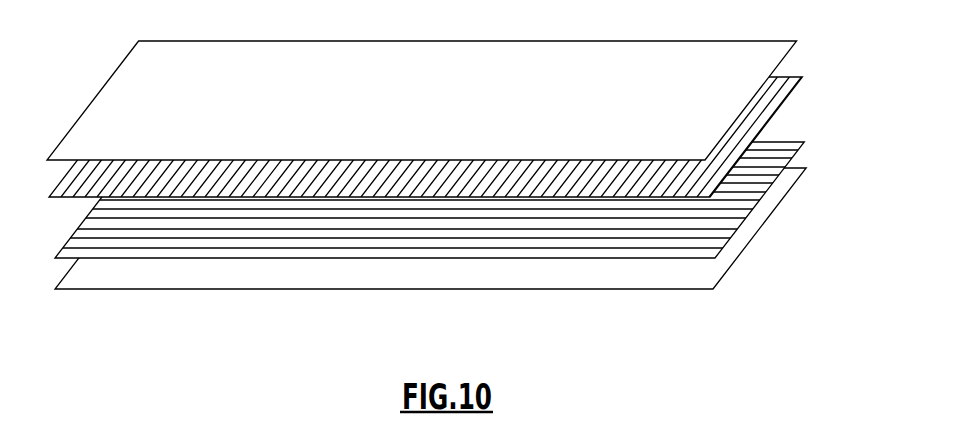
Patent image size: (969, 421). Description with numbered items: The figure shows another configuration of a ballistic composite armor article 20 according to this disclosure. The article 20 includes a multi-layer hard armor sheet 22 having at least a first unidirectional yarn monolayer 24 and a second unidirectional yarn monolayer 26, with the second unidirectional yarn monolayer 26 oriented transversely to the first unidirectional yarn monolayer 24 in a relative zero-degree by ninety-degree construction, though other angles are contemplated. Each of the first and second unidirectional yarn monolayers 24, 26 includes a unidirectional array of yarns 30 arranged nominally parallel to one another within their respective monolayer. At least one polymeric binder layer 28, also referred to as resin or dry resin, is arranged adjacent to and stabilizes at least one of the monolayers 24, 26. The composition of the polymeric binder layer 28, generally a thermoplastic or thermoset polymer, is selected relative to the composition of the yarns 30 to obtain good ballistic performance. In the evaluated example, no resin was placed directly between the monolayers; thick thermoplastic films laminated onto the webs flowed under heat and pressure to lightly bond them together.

The article 20 is at (484, 215).
The multi-layer hard armor sheet 22 is at (484, 203).
The first unidirectional yarn monolayer 24 is at (685, 170).
The second unidirectional yarn monolayer 26 is at (670, 243).
The polymeric binder layer 28 is at (615, 166).
The yarns 30 is at (348, 172).